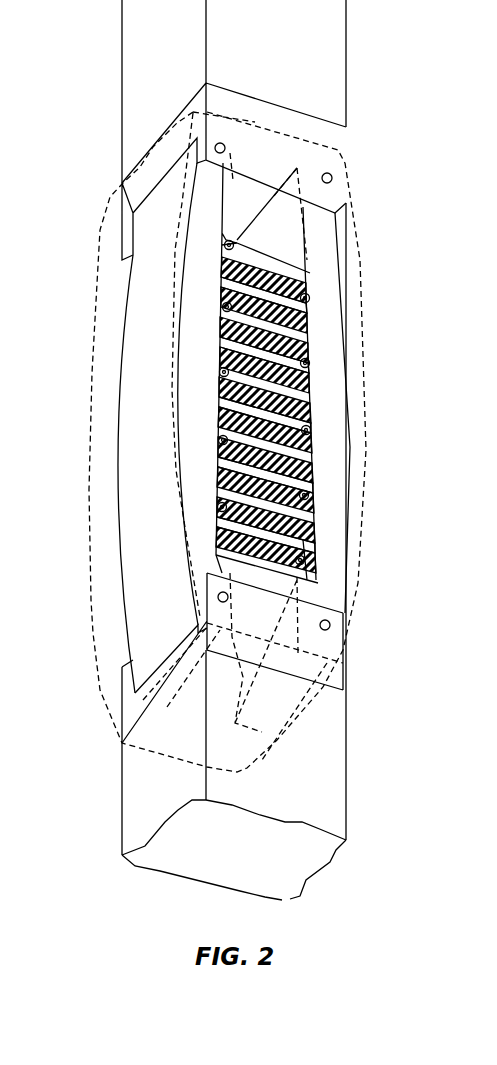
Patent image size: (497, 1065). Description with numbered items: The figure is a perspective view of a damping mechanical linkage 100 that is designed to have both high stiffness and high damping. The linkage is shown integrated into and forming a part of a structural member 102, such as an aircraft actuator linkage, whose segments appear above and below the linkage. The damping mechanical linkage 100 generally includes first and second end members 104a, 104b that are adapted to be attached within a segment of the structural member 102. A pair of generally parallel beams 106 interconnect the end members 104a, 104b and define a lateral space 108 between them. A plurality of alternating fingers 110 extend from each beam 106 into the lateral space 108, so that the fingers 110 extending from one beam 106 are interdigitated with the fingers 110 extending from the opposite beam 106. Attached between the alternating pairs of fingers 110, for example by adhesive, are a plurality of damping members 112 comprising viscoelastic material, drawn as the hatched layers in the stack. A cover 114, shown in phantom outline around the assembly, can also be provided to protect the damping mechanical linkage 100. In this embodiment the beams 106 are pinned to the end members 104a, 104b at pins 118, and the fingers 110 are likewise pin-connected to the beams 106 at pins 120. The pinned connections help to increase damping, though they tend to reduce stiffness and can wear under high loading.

The damping mechanical linkage 100 is at (83, 295).
The structural member 102 is at (135, 44).
The first end member 104a is at (165, 168).
The second end member 104b is at (135, 714).
The beam 106 is at (327, 428).
The lateral space 108 is at (292, 240).
The alternating fingers 110 is at (287, 360).
The damping member 112 is at (310, 550).
The cover 114 is at (93, 633).
The pin 118 is at (330, 175).
The pin 120 is at (219, 372).